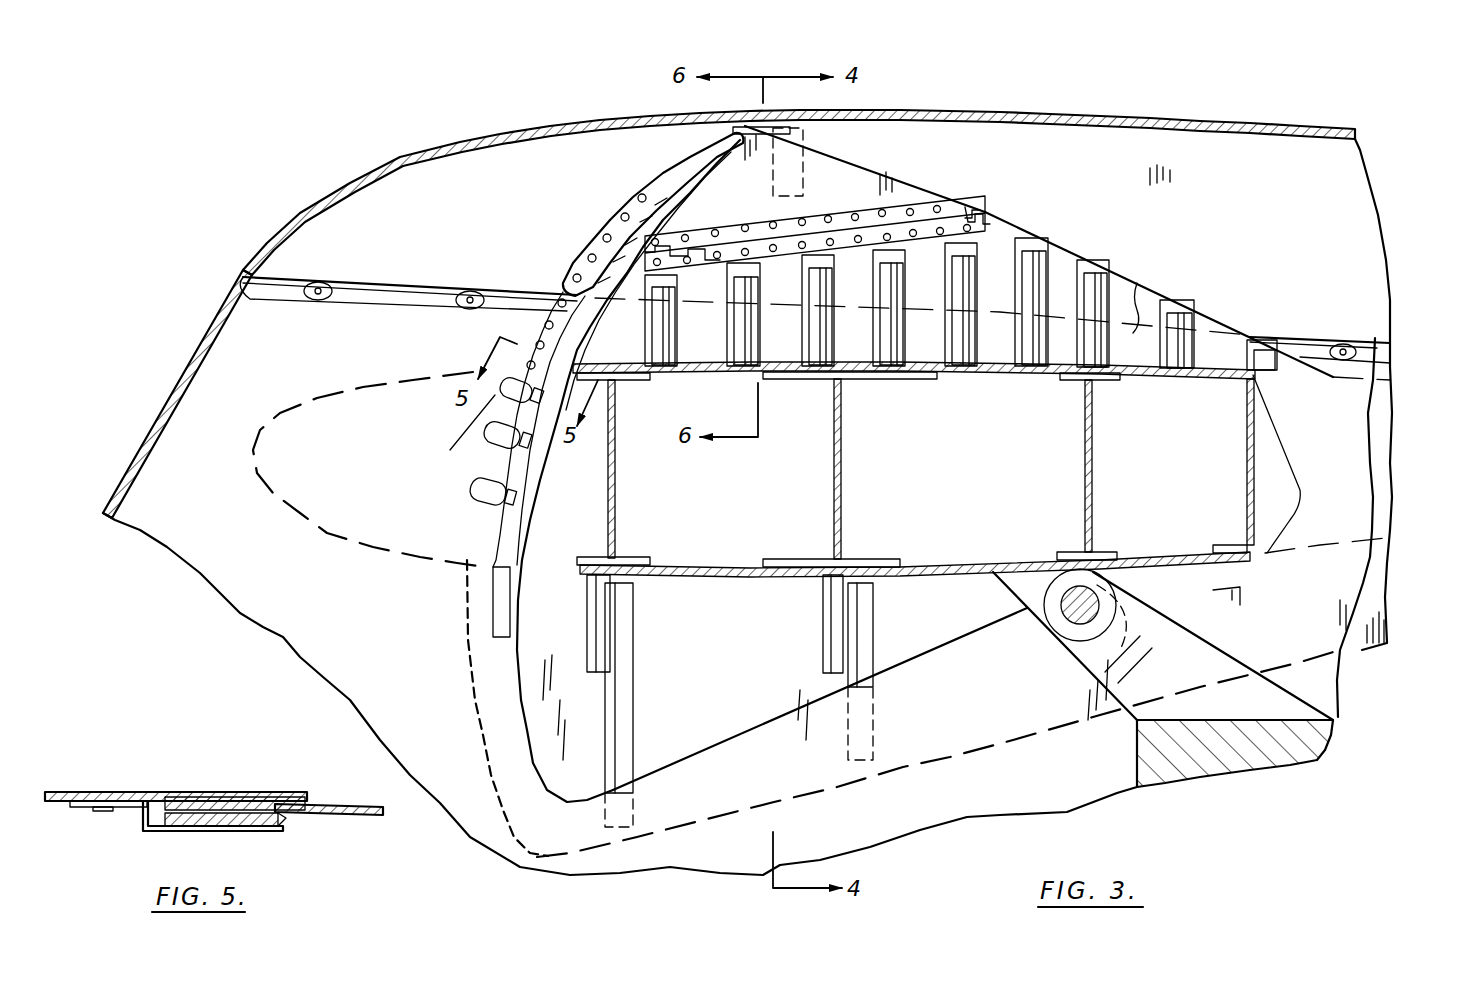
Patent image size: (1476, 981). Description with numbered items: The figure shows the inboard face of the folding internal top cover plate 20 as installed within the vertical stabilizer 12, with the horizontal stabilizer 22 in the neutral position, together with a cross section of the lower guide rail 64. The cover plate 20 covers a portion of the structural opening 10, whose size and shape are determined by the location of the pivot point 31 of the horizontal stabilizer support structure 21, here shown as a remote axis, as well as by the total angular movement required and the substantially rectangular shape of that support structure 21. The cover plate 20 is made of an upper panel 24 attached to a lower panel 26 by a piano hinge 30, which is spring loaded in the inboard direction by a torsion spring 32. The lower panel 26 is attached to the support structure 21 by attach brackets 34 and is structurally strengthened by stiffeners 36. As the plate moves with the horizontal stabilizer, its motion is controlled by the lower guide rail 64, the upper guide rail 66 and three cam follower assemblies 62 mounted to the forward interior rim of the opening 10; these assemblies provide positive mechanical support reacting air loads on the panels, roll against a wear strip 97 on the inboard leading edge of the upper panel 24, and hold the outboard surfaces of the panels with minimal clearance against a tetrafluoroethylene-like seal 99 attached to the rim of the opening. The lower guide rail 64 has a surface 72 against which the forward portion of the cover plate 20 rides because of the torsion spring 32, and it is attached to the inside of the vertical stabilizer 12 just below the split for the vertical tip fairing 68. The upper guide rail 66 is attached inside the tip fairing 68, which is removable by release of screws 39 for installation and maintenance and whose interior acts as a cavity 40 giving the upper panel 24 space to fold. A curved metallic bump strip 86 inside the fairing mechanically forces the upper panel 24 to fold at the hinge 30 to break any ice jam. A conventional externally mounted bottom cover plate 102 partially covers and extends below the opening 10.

In FIG. 3, the structural opening 10 is at (707, 743).
In FIG. 5, the structural opening 10 is at (307, 797).
In FIG. 3, the vertical stabilizer 12 is at (643, 863).
In FIG. 5, the vertical stabilizer 12 is at (60, 792).
In FIG. 3, the top cover plate 20 is at (1080, 248).
In FIG. 3, the horizontal stabilizer support structure 21 is at (942, 573).
In FIG. 3, the horizontal stabilizer 22 is at (332, 537).
In FIG. 3, the upper panel 24 is at (918, 185).
In FIG. 3, the lower panel 26 is at (1148, 298).
In FIG. 5, the lower panel 26 is at (337, 818).
In FIG. 3, the piano hinge 30 is at (986, 209).
In FIG. 3, the pivot point 31 is at (1057, 620).
In FIG. 3, the torsion spring 32 is at (842, 232).
In FIG. 3, the attach brackets 34 is at (742, 320).
In FIG. 3, the stiffeners 36 is at (972, 253).
In FIG. 3, the screws 39 is at (235, 281).
In FIG. 3, the cavity 40 is at (522, 133).
In FIG. 3, the cam follower assemblies 62 is at (482, 448).
In FIG. 3, the lower guide rail 64 is at (555, 320).
In FIG. 5, the lower guide rail 64 is at (193, 827).
In FIG. 3, the upper guide rail 66 is at (617, 244).
In FIG. 3, the vertical tip fairing 68 is at (385, 162).
In FIG. 5, the surface 72 is at (155, 833).
In FIG. 3, the bump strip 86 is at (803, 175).
In FIG. 5, the wear strip 97 is at (283, 823).
In FIG. 3, the seal 99 is at (493, 610).
In FIG. 5, the seal 99 is at (263, 796).
In FIG. 3, the bottom cover plate 102 is at (721, 660).